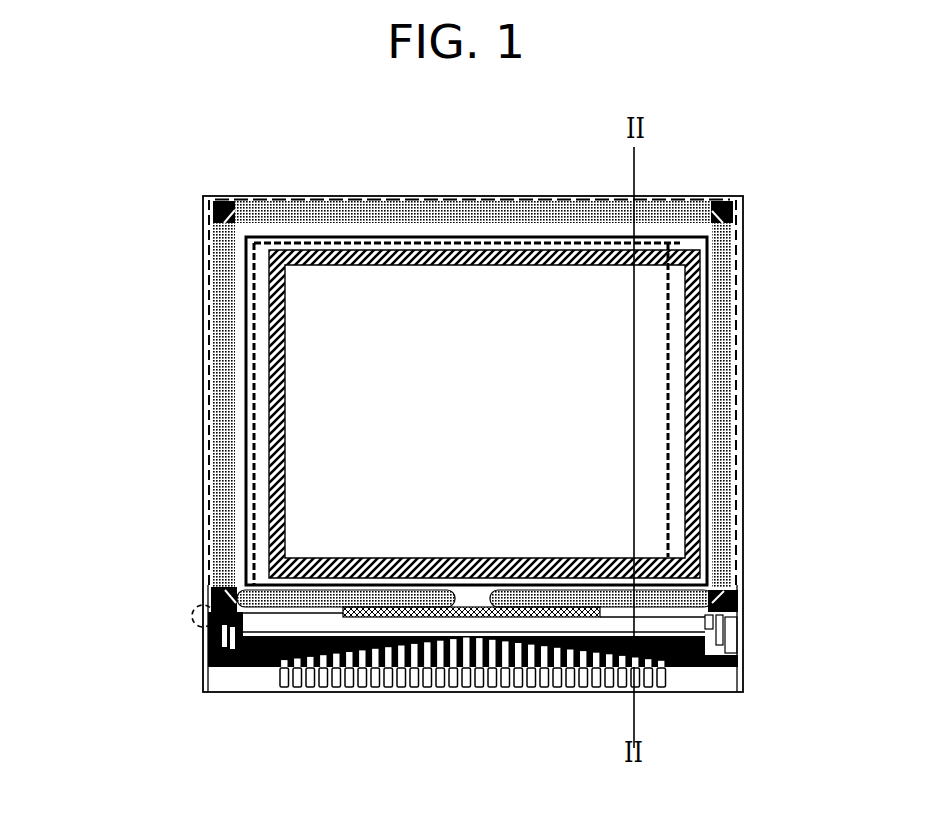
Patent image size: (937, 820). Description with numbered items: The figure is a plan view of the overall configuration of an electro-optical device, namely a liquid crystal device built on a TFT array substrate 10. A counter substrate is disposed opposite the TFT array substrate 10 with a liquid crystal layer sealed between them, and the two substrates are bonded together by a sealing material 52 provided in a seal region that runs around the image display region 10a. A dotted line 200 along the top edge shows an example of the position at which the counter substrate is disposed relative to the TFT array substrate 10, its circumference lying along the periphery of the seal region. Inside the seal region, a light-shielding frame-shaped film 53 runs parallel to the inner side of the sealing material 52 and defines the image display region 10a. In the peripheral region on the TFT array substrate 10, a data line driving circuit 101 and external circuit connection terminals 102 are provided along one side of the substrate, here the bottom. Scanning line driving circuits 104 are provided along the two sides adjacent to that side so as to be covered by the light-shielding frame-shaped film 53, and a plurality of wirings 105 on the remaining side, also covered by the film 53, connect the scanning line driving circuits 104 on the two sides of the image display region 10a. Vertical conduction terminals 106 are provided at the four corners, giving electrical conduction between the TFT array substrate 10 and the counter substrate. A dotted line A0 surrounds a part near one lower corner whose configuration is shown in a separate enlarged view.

The TFT array substrate 10 is at (312, 196).
The image display region 10a is at (485, 411).
The sealing material 52 is at (716, 410).
The light-shielding frame-shaped film 53 is at (700, 542).
The data line driving circuit 101 is at (287, 620).
The external circuit connection terminals 102 is at (433, 692).
The scanning line driving circuits 104 is at (263, 425).
The wirings 105 is at (390, 237).
The vertical conduction terminals 106 is at (203, 198).
The dotted line 200 is at (525, 197).
The dotted line AO A0 is at (192, 620).